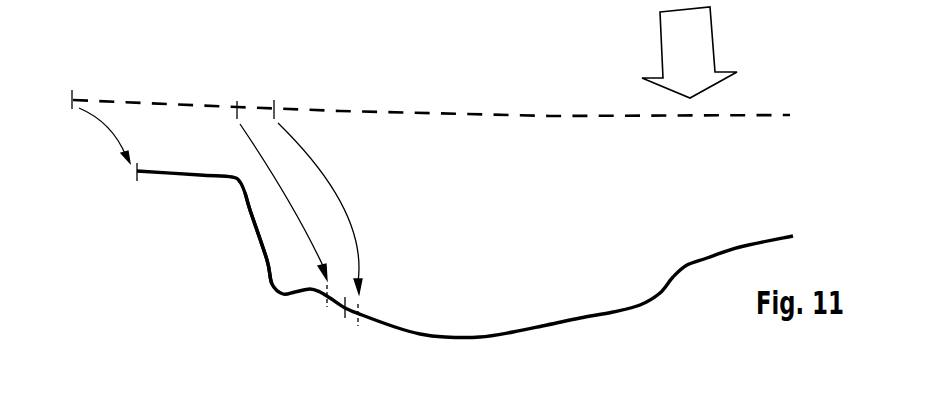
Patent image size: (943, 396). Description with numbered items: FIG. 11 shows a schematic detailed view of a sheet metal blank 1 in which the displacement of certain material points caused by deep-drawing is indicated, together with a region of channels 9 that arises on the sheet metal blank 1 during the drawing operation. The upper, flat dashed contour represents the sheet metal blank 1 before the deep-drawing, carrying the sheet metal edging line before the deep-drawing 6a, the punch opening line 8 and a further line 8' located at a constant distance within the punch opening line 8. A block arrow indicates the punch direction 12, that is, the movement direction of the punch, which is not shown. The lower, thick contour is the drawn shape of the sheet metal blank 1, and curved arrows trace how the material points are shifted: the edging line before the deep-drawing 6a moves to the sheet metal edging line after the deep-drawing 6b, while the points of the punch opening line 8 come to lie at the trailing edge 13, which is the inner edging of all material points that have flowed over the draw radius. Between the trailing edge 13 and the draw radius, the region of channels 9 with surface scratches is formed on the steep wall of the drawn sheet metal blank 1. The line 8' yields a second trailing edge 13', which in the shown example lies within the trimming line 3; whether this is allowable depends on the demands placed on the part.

The sheet metal blank 1 is at (487, 114).
The trimming line 3 is at (345, 316).
The sheet metal edging line before the deep-drawing 6a is at (76, 95).
The sheet metal edging line after the deep-drawing 6b is at (137, 183).
The punch opening line 8 is at (282, 172).
The line at constant distance within the punch opening line 8' is at (318, 178).
The region with channels 9 is at (263, 270).
The punch direction 12 is at (689, 52).
The trailing edge 13 is at (304, 313).
The second trailing edge 13' is at (387, 330).